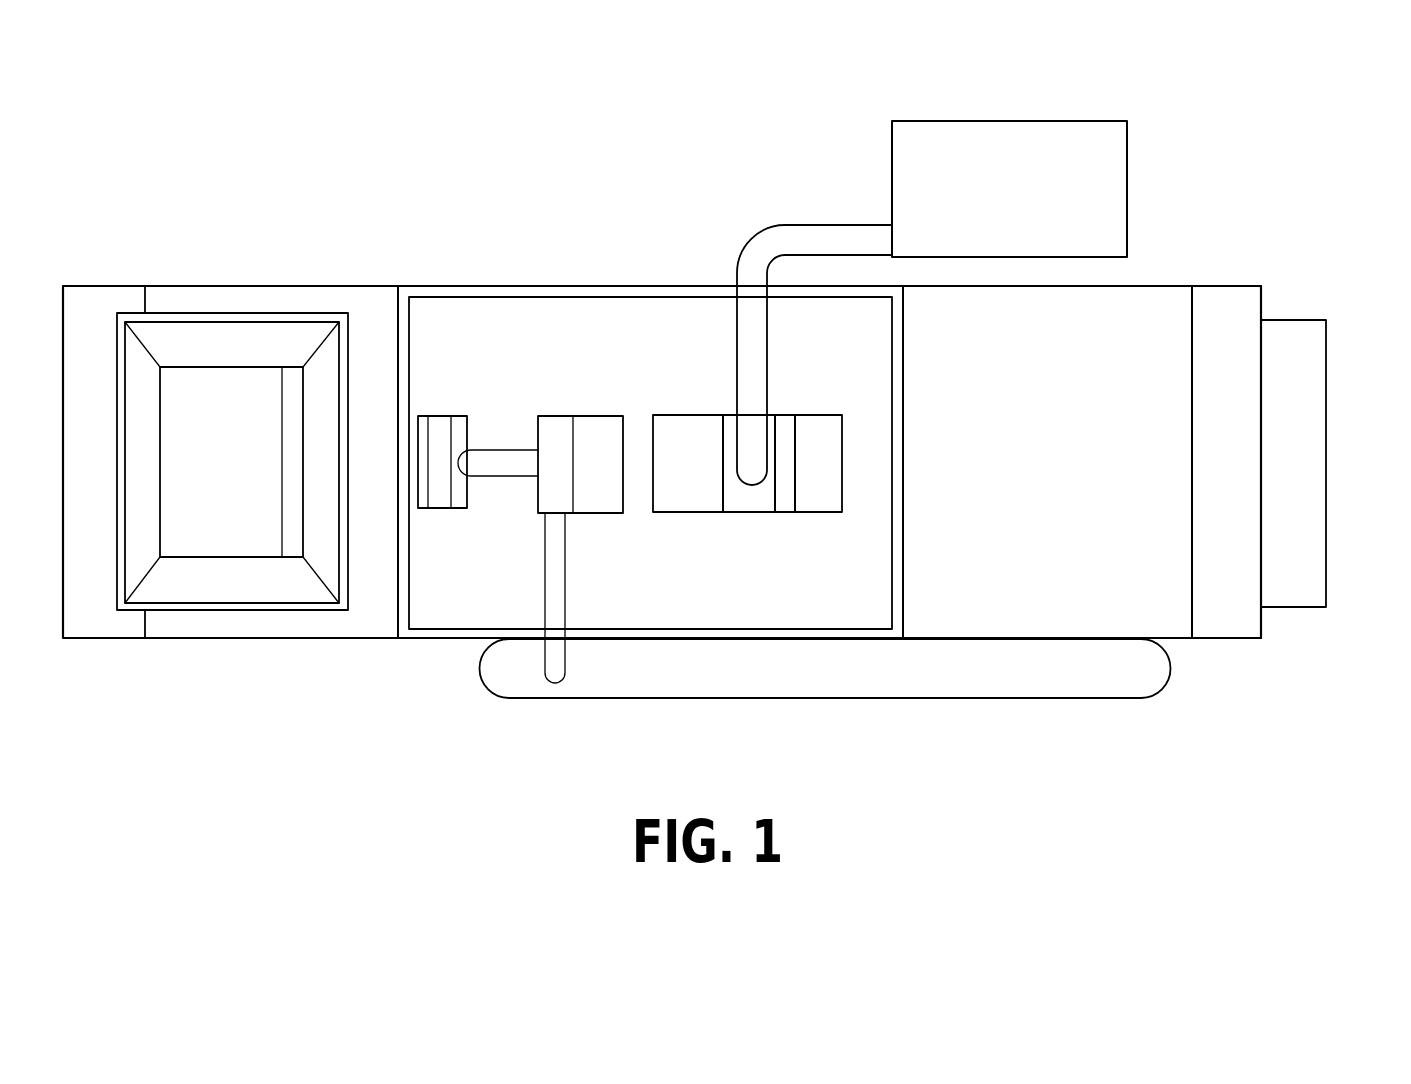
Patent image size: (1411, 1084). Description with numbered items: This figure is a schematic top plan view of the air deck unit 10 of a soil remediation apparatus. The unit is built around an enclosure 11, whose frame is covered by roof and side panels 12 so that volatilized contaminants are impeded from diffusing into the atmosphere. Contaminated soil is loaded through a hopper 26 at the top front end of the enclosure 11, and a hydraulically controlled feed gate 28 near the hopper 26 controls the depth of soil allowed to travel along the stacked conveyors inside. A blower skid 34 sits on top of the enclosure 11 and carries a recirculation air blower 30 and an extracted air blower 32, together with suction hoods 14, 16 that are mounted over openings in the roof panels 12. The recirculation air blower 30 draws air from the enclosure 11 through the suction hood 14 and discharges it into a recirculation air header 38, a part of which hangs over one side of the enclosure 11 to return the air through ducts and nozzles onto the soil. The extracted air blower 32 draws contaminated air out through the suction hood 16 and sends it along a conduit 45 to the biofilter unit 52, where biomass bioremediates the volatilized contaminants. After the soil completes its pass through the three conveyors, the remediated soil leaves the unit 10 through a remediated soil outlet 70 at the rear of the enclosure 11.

The air deck unit 10 is at (373, 242).
The enclosure 11 is at (1192, 286).
The roof and side panels 12 is at (1130, 286).
The suction hood 14 is at (438, 490).
The suction hood 16 is at (820, 433).
The hopper 26 is at (243, 337).
The feed gate 28 is at (297, 517).
The recirculation air blower 30 is at (597, 433).
The extracted air blower 32 is at (690, 433).
The blower skid 34 is at (523, 337).
The recirculation air header 38 is at (1015, 698).
The conduit 45 is at (853, 225).
The biofilter unit 52 is at (1127, 205).
The remediated soil outlet 70 is at (1261, 565).